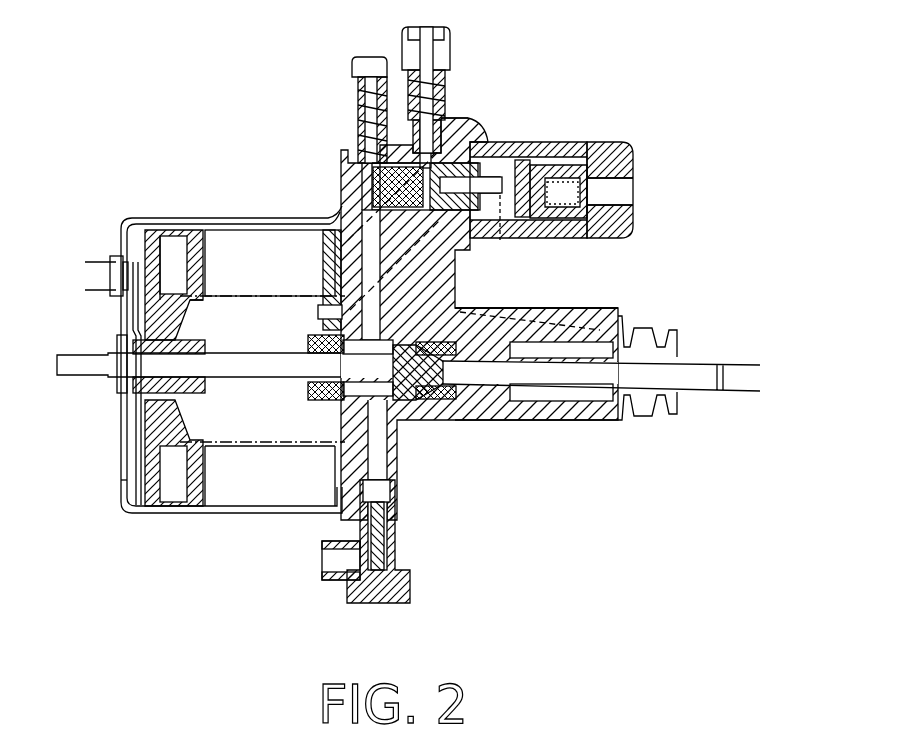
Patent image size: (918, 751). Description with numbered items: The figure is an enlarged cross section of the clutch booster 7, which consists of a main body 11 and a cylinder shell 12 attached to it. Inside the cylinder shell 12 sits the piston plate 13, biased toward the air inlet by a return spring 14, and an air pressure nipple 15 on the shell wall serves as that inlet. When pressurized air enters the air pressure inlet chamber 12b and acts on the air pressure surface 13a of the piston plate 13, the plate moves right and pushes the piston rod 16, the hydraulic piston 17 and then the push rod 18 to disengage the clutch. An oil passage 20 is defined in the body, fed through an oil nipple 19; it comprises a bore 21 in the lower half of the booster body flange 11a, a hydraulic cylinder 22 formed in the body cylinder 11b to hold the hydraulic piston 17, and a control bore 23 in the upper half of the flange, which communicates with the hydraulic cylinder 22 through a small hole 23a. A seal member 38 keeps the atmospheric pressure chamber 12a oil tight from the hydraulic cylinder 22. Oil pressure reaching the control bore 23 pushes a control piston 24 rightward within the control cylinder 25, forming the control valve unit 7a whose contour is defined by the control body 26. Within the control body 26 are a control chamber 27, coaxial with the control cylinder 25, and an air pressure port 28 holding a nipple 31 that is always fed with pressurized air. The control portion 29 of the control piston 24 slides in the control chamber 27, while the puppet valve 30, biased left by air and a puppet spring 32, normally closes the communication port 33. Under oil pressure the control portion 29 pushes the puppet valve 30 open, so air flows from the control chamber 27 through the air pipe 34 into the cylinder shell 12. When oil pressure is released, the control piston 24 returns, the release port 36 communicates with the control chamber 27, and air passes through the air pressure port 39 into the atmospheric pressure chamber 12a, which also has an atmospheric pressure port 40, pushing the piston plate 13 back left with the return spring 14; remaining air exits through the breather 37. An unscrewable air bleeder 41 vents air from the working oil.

The clutch booster 7 is at (243, 105).
The control valve unit 7a is at (583, 148).
The main body 11 is at (337, 145).
The booster body flange 11a is at (392, 445).
The body cylinder 11b is at (490, 421).
The cylinder shell 12 is at (206, 217).
The atmospheric pressure chamber 12a is at (292, 481).
The air pressure inlet chamber 12b is at (135, 462).
The piston plate 13 is at (150, 303).
The air pressure surface 13a is at (140, 405).
The return spring 14 is at (196, 298).
The air pressure nipple 15 is at (96, 262).
The piston rod 16 is at (248, 366).
The hydraulic piston 17 is at (425, 402).
The push rod 18 is at (565, 374).
The oil nipple 19 is at (345, 580).
The oil passage 20 is at (388, 478).
The bore 21 is at (405, 505).
The hydraulic cylinder 22 is at (320, 405).
The control bore 23 is at (330, 270).
The small hole 23a is at (320, 316).
The control piston 24 is at (350, 178).
The control cylinder 25 is at (348, 195).
The control body 26 is at (504, 84).
The control chamber 27 is at (496, 143).
The air pressure port 28 is at (566, 160).
The control portion 29 is at (440, 160).
The puppet valve 30 is at (528, 160).
The nipple 31 is at (622, 158).
The puppet spring 32 is at (628, 192).
The communication port 33 is at (545, 210).
The air pipe 34 is at (505, 200).
The release port 36 is at (445, 195).
The breather 37 is at (448, 66).
The seal member 38 is at (300, 388).
The air pressure port 39 is at (482, 298).
The atmospheric pressure port 40 is at (545, 322).
The air bleeder 41 is at (355, 96).